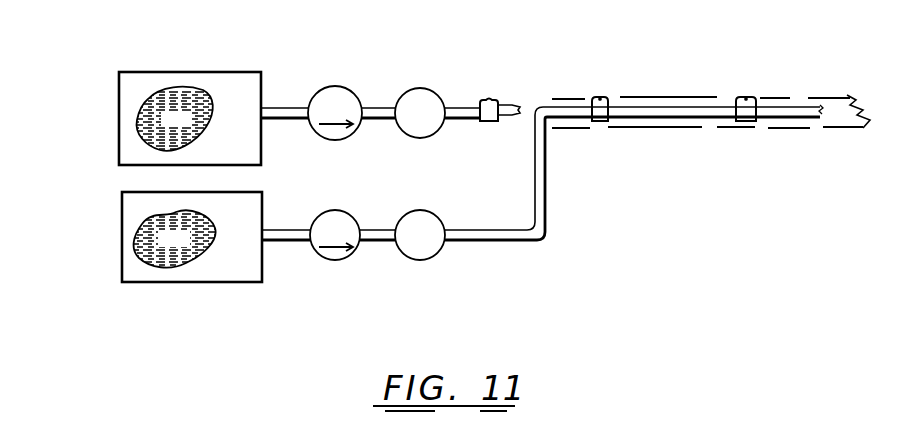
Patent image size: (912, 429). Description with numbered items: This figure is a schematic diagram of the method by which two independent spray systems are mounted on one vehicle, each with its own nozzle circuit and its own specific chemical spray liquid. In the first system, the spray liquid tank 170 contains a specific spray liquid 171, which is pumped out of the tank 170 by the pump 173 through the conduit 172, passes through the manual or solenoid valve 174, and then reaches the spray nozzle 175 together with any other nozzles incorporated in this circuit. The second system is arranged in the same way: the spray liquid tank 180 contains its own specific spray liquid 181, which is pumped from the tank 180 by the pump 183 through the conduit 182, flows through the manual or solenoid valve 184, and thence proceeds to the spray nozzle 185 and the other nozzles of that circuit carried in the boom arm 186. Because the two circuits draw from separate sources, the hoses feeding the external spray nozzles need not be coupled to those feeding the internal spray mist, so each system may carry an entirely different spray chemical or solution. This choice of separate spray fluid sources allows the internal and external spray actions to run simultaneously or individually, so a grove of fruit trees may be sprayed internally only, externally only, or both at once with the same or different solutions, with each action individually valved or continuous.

The spray liquid tank 170 is at (203, 77).
The spray liquid 171 is at (175, 119).
The conduit 172 is at (275, 108).
The pump 173 is at (323, 93).
The manual or solenoid valve 174 is at (407, 93).
The spray nozzle 175 is at (486, 100).
The spray liquid tank 180 is at (245, 270).
The spray liquid 181 is at (175, 238).
The conduit 182 is at (290, 237).
The pump 183 is at (338, 262).
The manual or solenoid valve 184 is at (426, 259).
The spray nozzle 185 is at (596, 97).
The boom arm 186 is at (650, 97).